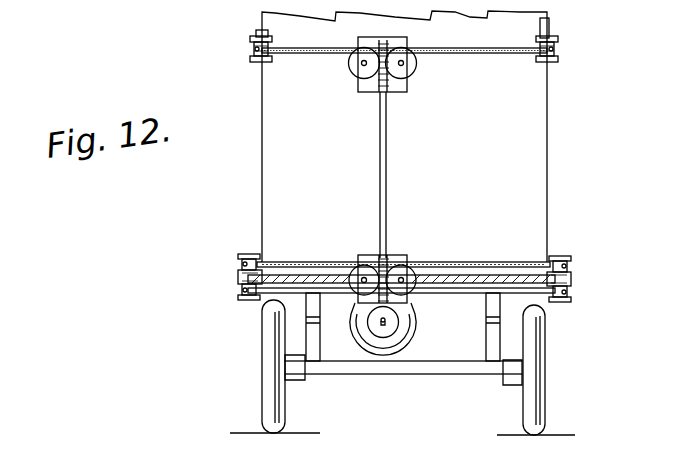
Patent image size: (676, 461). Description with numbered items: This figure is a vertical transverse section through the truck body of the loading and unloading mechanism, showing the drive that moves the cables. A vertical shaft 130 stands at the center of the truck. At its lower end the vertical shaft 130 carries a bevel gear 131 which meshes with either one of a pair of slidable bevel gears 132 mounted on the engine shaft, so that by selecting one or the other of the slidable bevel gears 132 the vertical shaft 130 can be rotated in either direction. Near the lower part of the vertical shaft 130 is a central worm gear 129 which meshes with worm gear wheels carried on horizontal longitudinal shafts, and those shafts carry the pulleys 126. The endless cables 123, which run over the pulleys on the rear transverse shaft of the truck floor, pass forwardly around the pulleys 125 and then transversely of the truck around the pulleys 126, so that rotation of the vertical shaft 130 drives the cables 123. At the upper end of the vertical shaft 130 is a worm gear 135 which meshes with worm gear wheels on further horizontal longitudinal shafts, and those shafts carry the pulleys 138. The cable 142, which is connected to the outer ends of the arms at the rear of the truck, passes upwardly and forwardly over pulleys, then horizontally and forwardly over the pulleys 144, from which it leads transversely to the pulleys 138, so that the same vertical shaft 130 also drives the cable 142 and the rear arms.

The endless cable 123 is at (296, 256).
The pulleys 125 is at (238, 298).
The pulleys 126 is at (360, 270).
The central worm gear 129 is at (399, 258).
The vertical shaft 130 is at (387, 208).
The bevel gear 131 is at (410, 313).
The slidable bevel gears 132 is at (385, 332).
The worm gear 135 is at (395, 85).
The pulleys 138 is at (359, 70).
The cable 142 is at (306, 53).
The pulleys 144 is at (251, 60).